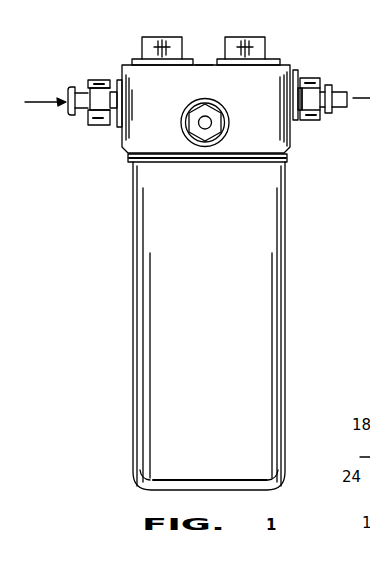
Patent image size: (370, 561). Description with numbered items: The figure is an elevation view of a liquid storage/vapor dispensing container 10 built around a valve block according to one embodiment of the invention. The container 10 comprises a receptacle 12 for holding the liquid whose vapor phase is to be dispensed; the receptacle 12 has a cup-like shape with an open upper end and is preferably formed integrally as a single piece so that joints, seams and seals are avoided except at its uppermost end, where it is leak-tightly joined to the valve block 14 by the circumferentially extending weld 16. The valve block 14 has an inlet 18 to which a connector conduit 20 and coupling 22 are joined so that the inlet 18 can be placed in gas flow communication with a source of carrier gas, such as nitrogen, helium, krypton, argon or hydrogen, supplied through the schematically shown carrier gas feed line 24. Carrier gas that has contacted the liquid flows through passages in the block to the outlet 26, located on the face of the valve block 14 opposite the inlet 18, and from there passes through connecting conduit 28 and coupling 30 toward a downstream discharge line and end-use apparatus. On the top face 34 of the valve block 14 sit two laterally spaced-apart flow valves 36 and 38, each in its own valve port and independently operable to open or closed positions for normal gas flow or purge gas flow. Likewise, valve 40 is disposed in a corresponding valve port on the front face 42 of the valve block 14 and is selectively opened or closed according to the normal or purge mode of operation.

The container 10 is at (180, 252).
The receptacle 12 is at (153, 296).
The valve block 14 is at (263, 82).
The circumferentially extending weld 16 is at (225, 158).
The inlet 18 is at (118, 84).
The connector conduit 20 is at (117, 119).
The coupling 22 is at (97, 124).
The carrier gas feed line 24 is at (50, 103).
The outlet 26 is at (306, 78).
The connecting conduit 28 is at (296, 120).
The coupling 30 is at (316, 121).
The top face 34 is at (203, 64).
The flow valve 36 is at (140, 60).
The flow valve 38 is at (271, 58).
The valve 40 is at (184, 112).
The front face 42 is at (220, 91).